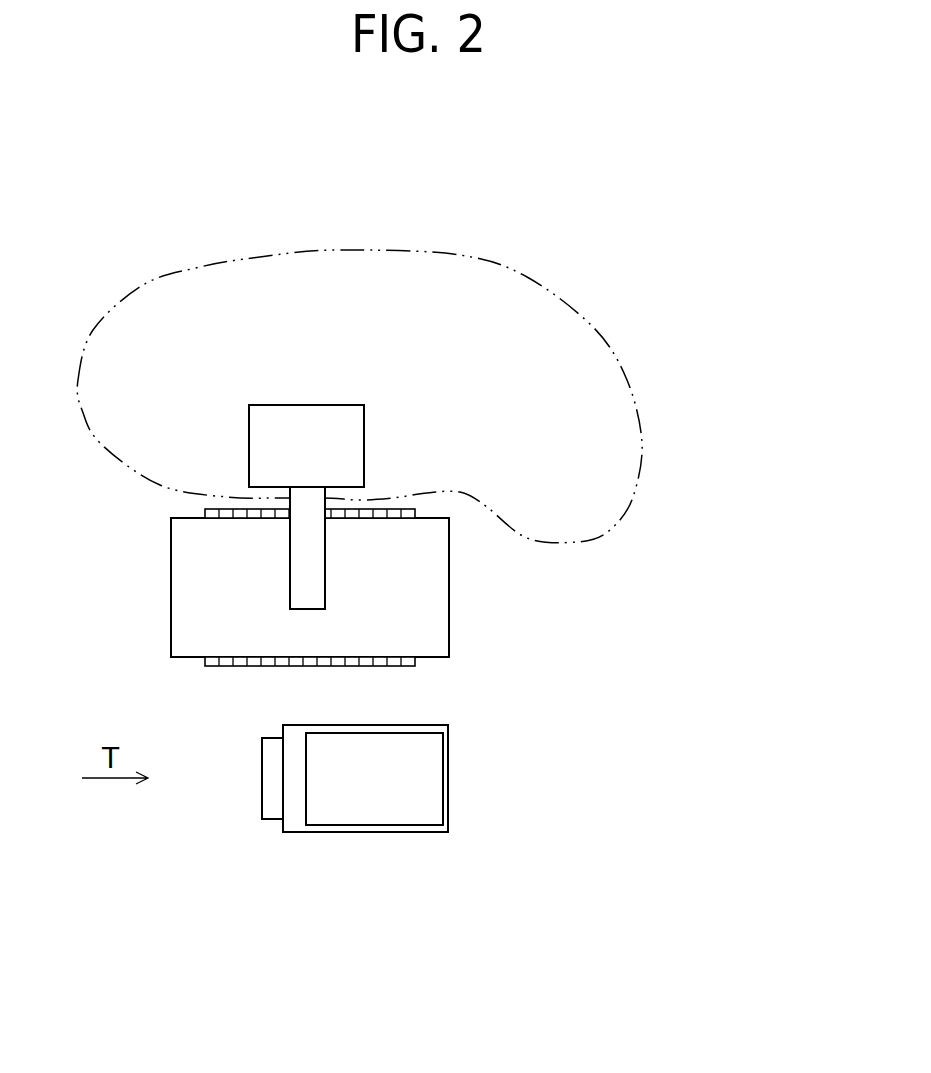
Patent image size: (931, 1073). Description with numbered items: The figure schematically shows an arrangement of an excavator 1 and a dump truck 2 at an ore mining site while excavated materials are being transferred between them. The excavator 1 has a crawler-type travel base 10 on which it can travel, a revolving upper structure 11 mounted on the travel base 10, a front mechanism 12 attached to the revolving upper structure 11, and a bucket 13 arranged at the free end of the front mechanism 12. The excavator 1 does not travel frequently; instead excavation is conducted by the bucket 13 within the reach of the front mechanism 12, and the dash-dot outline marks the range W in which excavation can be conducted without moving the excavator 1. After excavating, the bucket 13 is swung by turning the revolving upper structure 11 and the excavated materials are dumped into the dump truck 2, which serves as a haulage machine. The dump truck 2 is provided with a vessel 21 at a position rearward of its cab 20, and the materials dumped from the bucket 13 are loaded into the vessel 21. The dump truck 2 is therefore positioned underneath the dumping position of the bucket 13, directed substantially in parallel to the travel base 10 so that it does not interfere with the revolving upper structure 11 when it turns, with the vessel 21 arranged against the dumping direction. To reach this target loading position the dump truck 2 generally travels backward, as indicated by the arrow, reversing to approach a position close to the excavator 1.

The excavator 1 is at (311, 450).
The travel base 10 is at (203, 513).
The revolving upper structure 11 is at (440, 622).
The front mechanism 12 is at (302, 556).
The bucket 13 is at (307, 422).
The dump truck 2 is at (411, 828).
The cab 20 is at (272, 815).
The vessel 21 is at (408, 817).
The range W is at (359, 396).